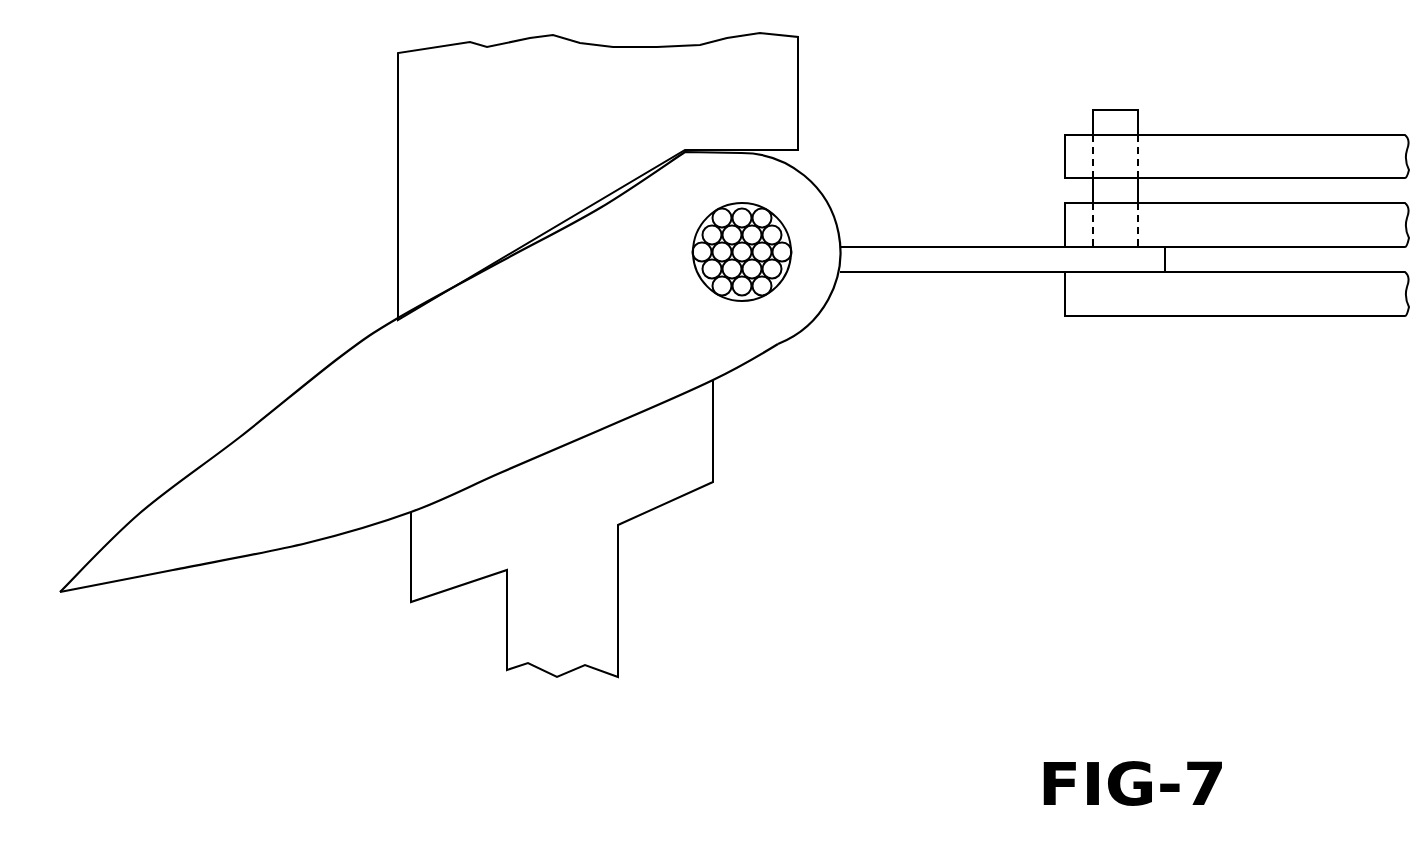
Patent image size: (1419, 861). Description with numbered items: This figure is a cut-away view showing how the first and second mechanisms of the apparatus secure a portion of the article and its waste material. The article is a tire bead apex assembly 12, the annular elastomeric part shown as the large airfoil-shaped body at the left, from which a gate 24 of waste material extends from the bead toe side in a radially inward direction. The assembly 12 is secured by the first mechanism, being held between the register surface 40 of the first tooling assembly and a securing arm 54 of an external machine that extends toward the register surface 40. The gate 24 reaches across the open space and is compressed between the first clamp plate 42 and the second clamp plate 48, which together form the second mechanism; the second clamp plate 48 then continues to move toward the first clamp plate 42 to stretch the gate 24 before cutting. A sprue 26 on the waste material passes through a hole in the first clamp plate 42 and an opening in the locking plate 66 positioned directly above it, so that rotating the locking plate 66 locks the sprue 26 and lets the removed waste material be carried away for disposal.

The tire bead apex assembly 12 is at (508, 374).
The register surface 40 is at (520, 146).
The securing arm 54 is at (538, 530).
The gate 24 is at (947, 245).
The sprue 26 is at (1113, 110).
The locking plate 66 is at (1243, 163).
The first clamp plate 42 is at (1260, 228).
The second clamp plate 48 is at (1157, 302).